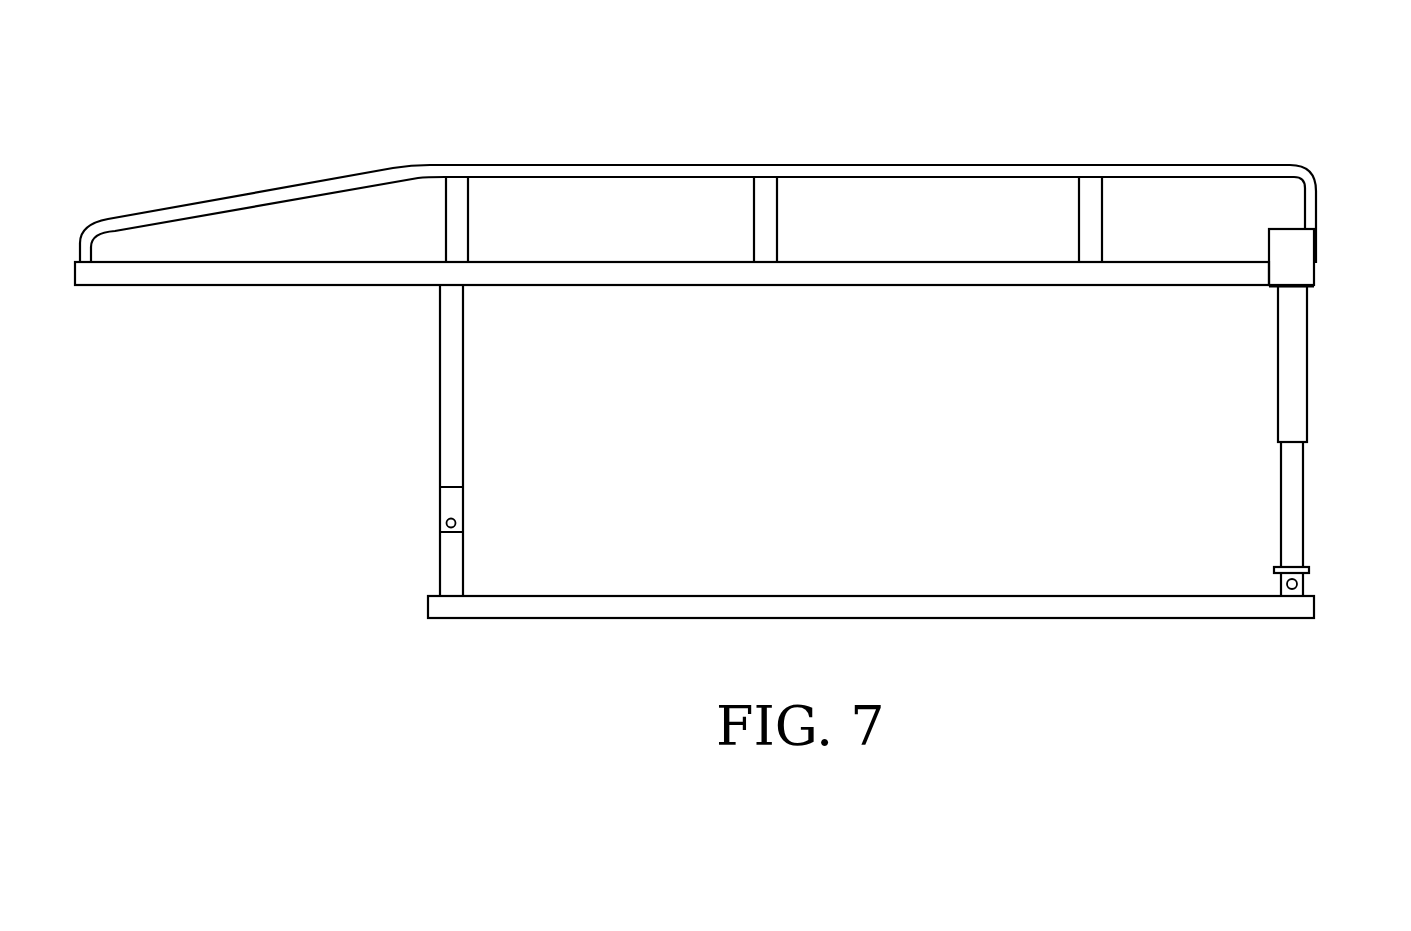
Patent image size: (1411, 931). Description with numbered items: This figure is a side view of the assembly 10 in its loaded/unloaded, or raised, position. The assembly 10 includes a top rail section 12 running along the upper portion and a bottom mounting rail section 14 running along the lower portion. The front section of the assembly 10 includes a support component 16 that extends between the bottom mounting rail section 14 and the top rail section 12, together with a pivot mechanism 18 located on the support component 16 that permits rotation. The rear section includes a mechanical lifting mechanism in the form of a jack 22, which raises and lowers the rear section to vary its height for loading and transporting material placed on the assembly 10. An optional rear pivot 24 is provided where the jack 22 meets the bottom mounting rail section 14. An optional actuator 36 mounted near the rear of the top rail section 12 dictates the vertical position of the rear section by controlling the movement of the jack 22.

The assembly 10 is at (292, 88).
The top rail section 12 is at (870, 163).
The bottom mounting rail section 14 is at (963, 620).
The support component 16 is at (450, 415).
The pivot mechanism 18 is at (447, 523).
The jack 22 is at (1285, 410).
The rear pivot 24 is at (1300, 585).
The actuator 36 is at (1340, 249).